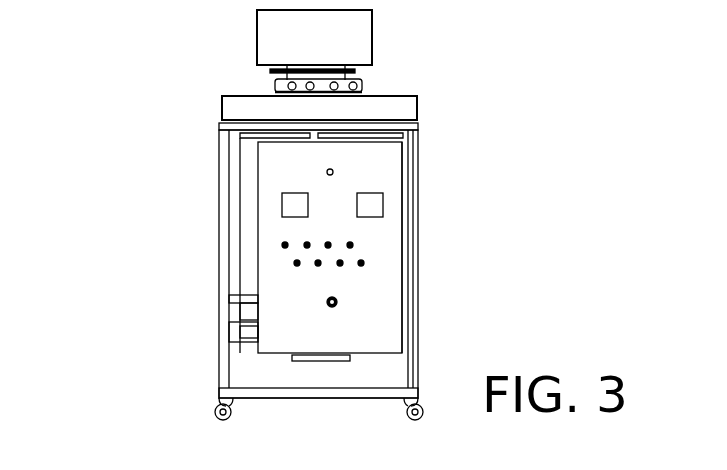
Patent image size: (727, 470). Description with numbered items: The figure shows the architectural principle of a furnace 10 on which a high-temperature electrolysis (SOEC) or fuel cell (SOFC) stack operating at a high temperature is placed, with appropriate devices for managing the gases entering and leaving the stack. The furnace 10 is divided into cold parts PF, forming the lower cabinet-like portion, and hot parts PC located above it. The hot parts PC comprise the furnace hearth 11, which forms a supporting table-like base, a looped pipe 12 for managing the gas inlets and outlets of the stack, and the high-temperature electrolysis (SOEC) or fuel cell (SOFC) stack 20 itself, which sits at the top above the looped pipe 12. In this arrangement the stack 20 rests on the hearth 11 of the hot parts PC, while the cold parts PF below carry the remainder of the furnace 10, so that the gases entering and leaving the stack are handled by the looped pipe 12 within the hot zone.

The furnace 10 is at (128, 94).
The furnace hearth 11 is at (226, 108).
The looped pipe 12 is at (265, 78).
The high-temperature electrolysis (SOEC) or fuel cell (SOFC) stack 20 is at (269, 34).
The hot parts PC is at (433, 10).
The cold parts PF is at (433, 130).